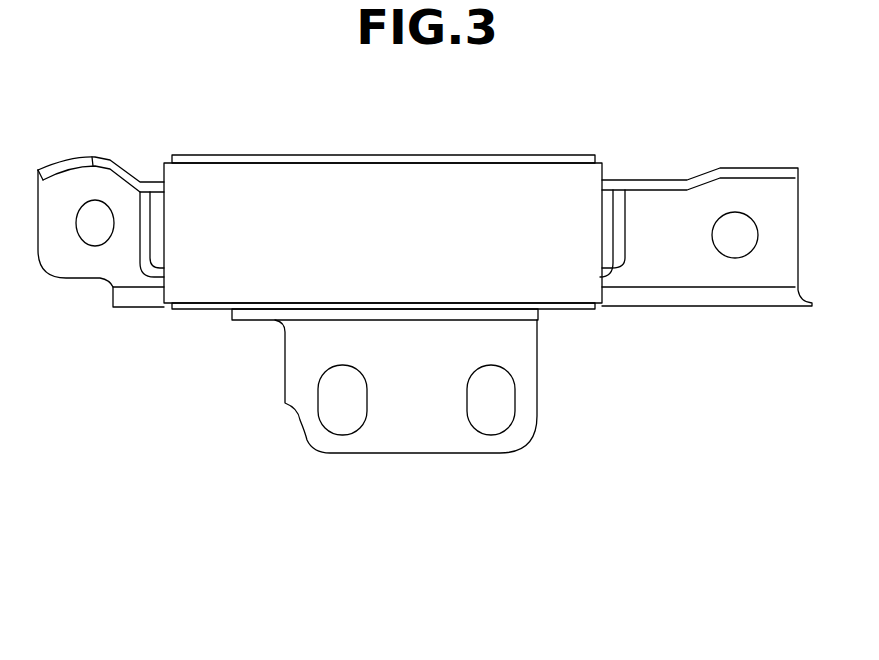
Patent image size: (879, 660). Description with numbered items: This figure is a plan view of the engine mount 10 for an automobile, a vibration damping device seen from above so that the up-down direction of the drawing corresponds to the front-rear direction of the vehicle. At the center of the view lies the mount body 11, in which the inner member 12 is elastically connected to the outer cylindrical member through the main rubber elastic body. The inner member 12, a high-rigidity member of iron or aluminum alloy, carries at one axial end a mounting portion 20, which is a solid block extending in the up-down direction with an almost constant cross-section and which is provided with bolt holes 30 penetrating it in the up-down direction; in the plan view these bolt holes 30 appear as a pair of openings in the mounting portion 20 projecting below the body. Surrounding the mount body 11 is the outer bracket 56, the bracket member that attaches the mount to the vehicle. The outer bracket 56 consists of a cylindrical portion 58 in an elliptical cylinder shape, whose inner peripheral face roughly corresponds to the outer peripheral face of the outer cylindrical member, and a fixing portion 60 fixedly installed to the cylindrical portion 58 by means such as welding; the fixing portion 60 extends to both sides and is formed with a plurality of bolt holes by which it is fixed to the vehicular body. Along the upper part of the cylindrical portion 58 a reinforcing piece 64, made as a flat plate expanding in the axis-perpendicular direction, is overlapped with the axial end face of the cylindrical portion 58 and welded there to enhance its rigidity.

The engine mount 10 is at (165, 390).
The mount body 11 is at (537, 456).
The inner member 12 is at (305, 442).
The mounting portion 20 is at (510, 350).
The bolt holes 30 is at (332, 381).
The outer bracket 56 is at (138, 312).
The cylindrical portion 58 is at (297, 187).
The fixing portion 60 is at (685, 258).
The reinforcing piece 64 is at (499, 160).